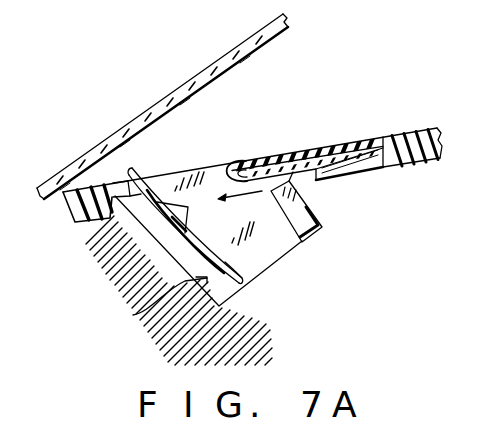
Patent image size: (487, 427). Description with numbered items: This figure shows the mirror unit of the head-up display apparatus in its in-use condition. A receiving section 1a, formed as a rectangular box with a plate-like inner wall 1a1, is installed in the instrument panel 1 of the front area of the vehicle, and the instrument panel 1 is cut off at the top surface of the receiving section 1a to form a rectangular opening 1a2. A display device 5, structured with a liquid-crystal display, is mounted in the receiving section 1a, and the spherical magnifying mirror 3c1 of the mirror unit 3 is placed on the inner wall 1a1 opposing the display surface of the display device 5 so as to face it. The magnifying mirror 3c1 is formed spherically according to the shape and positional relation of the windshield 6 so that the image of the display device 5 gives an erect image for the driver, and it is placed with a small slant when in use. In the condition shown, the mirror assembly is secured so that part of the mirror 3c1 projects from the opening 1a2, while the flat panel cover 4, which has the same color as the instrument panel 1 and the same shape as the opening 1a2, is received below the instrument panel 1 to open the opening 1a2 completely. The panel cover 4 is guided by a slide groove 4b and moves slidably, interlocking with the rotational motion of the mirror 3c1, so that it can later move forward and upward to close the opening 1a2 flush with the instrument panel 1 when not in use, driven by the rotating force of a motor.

The instrument panel 1 is at (407, 132).
The receiving section 1a is at (283, 233).
The inner wall 1a1 is at (133, 315).
The opening 1a2 is at (121, 186).
The mirror unit 3 is at (232, 291).
The magnifying mirror 3c1 is at (238, 258).
The panel cover 4 is at (321, 153).
The slide groove 4b is at (233, 162).
The display device 5 is at (299, 211).
The windshield 6 is at (163, 99).